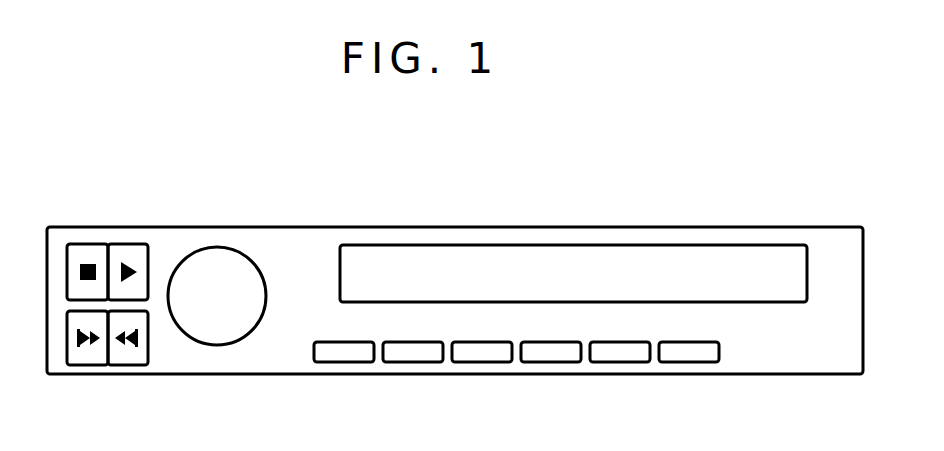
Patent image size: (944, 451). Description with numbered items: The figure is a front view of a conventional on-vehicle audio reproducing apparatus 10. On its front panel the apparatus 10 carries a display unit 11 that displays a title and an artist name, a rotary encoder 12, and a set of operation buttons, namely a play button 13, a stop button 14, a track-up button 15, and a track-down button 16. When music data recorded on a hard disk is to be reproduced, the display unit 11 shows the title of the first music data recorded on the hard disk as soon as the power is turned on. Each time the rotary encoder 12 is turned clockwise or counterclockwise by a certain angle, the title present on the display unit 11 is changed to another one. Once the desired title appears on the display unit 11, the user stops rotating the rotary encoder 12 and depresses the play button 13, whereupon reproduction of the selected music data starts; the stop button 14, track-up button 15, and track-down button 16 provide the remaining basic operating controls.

The on-vehicle audio reproducing apparatus 10 is at (805, 210).
The display unit 11 is at (573, 245).
The rotary encoder 12 is at (217, 247).
The play button 13 is at (122, 244).
The stop button 14 is at (76, 244).
The track-up button 15 is at (125, 366).
The track-down button 16 is at (78, 366).